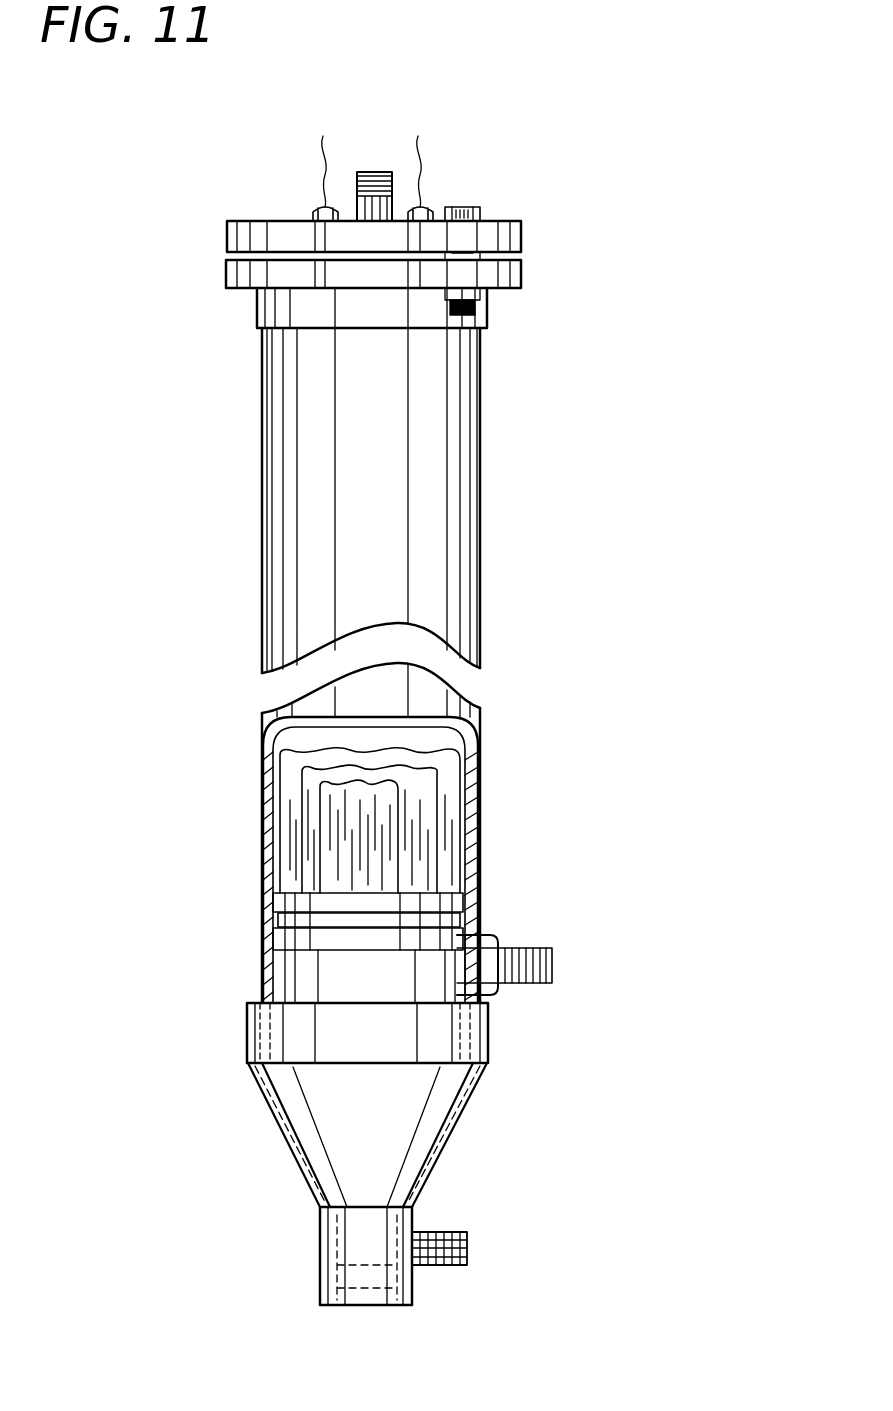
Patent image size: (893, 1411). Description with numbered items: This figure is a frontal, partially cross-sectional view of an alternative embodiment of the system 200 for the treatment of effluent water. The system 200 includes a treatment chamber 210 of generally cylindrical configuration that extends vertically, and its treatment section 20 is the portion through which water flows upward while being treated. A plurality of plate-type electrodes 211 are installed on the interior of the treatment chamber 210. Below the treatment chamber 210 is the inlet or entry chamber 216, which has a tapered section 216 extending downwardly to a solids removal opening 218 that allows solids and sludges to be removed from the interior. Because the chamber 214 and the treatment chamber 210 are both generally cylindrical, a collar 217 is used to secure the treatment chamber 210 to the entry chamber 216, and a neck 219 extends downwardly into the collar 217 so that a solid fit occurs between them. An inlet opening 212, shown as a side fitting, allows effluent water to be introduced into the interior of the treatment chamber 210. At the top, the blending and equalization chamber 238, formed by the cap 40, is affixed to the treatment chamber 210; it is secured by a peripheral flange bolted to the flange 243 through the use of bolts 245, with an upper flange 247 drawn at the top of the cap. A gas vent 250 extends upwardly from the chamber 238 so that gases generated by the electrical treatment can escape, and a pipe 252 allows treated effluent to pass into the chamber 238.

The cap 40 is at (227, 238).
The pipe 252 is at (373, 168).
The gas vent 250 is at (427, 157).
The bolts 245 is at (478, 207).
The upper flange 247 is at (522, 237).
The flange 243 is at (505, 277).
The blending and equalization chamber 238 is at (295, 305).
The treatment chamber 210 is at (485, 572).
The treatment section 20 is at (290, 610).
The system 200 is at (530, 700).
The plate-type electrodes 211 is at (430, 835).
The inlet opening 212 is at (505, 945).
The neck 219 is at (470, 1048).
The collar 217 is at (250, 1030).
The chamber 214 is at (305, 1135).
The inlet chamber 216 is at (450, 1135).
The solids removal opening 218 is at (465, 1245).